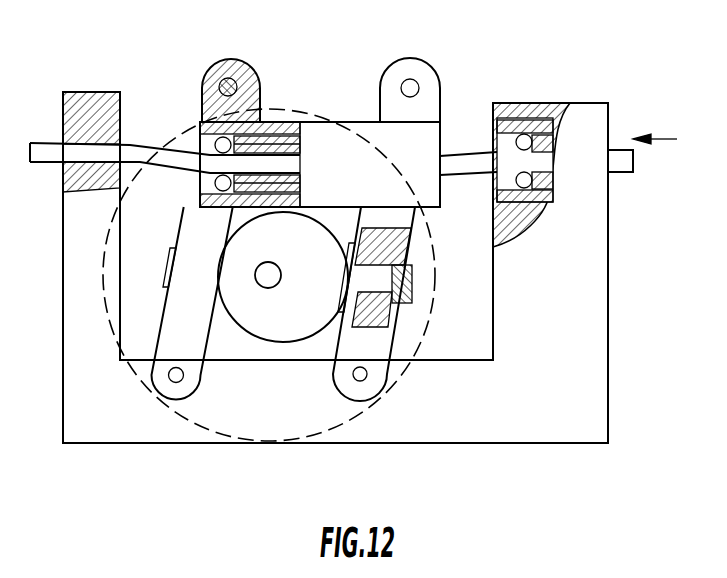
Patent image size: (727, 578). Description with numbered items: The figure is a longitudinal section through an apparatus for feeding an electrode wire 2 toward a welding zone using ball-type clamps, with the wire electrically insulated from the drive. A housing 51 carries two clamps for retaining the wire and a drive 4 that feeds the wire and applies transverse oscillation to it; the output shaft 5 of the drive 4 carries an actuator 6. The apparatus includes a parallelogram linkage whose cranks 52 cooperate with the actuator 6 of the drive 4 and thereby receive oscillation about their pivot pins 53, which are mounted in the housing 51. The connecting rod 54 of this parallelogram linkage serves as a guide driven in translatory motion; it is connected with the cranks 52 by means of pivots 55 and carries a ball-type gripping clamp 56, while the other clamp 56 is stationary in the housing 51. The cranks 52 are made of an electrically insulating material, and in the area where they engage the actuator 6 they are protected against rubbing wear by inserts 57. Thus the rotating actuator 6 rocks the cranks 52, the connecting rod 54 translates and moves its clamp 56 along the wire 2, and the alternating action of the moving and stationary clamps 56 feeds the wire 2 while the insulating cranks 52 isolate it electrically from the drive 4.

The electrode wire 2 is at (618, 158).
The drive 4 is at (417, 318).
The output shaft 5 is at (273, 283).
The actuator 6 is at (247, 320).
The housing 51 is at (560, 428).
The cranks 52 is at (165, 305).
The pivot pins 53 is at (176, 366).
The connecting rod 54 is at (316, 130).
The pivots 55 is at (225, 80).
The clamp 56 is at (207, 140).
The inserts 57 is at (168, 262).